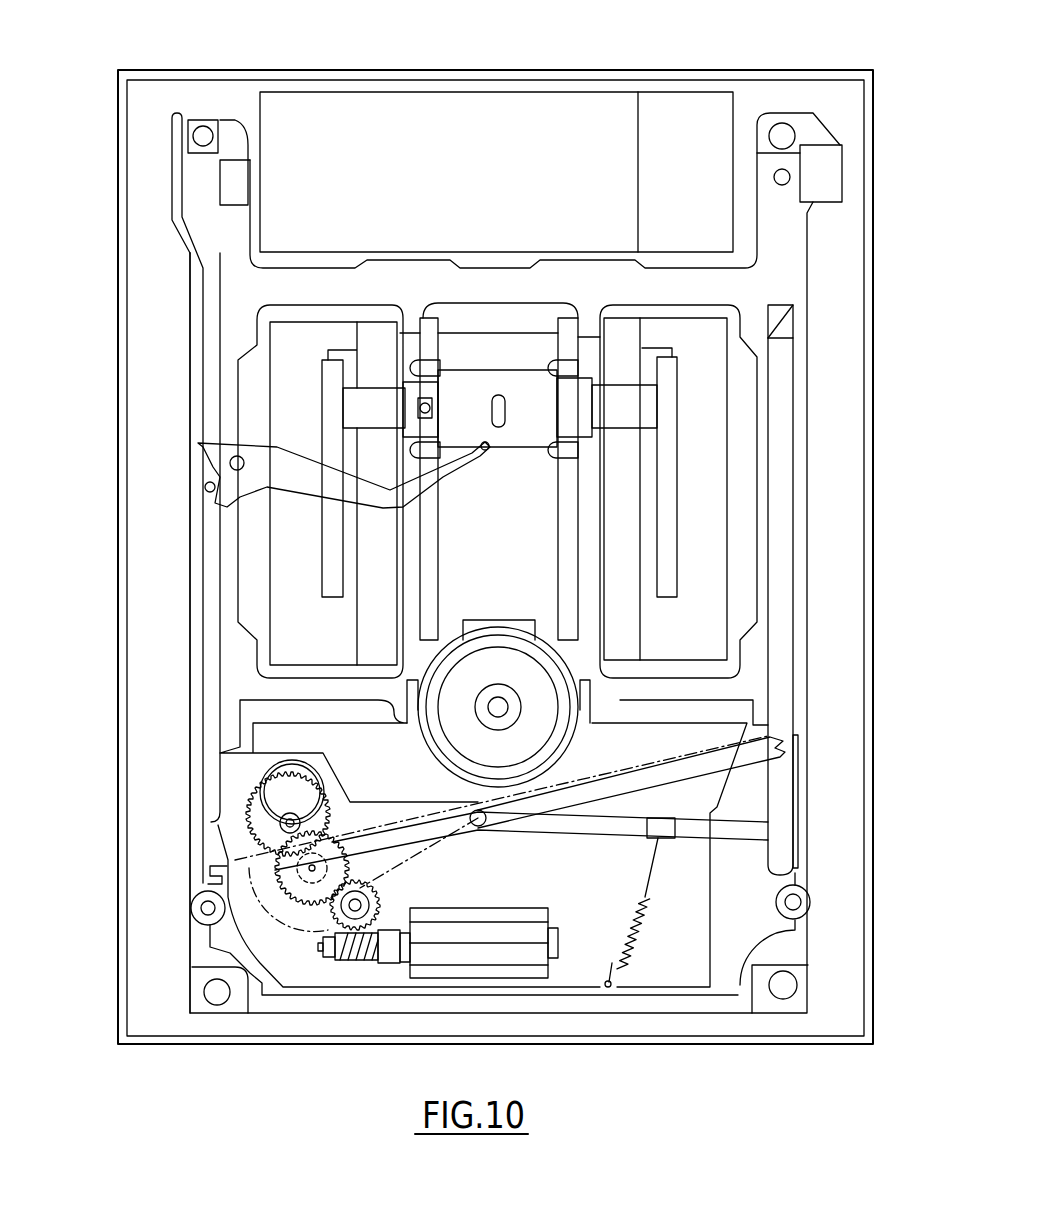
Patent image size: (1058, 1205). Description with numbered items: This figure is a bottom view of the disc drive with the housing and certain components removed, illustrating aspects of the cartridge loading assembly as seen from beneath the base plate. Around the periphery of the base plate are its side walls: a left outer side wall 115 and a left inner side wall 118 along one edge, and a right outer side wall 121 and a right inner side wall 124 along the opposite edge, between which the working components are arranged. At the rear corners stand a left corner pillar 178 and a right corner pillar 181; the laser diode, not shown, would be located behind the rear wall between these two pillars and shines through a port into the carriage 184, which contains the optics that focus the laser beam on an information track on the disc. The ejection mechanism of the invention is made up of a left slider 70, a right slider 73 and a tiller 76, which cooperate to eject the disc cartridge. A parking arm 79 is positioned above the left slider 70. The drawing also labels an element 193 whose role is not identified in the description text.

The left slider 70 is at (212, 612).
The right slider 73 is at (782, 808).
The tiller 76 is at (600, 828).
The parking arm 79 is at (200, 447).
The left outer side wall 115 is at (195, 417).
The left inner side wall 118 is at (208, 367).
The right outer side wall 121 is at (805, 565).
The right inner side wall 124 is at (763, 600).
The left corner pillar 178 is at (229, 133).
The right corner pillar 181 is at (833, 187).
The carriage 184 is at (643, 407).
The pivot pin 193 is at (485, 450).